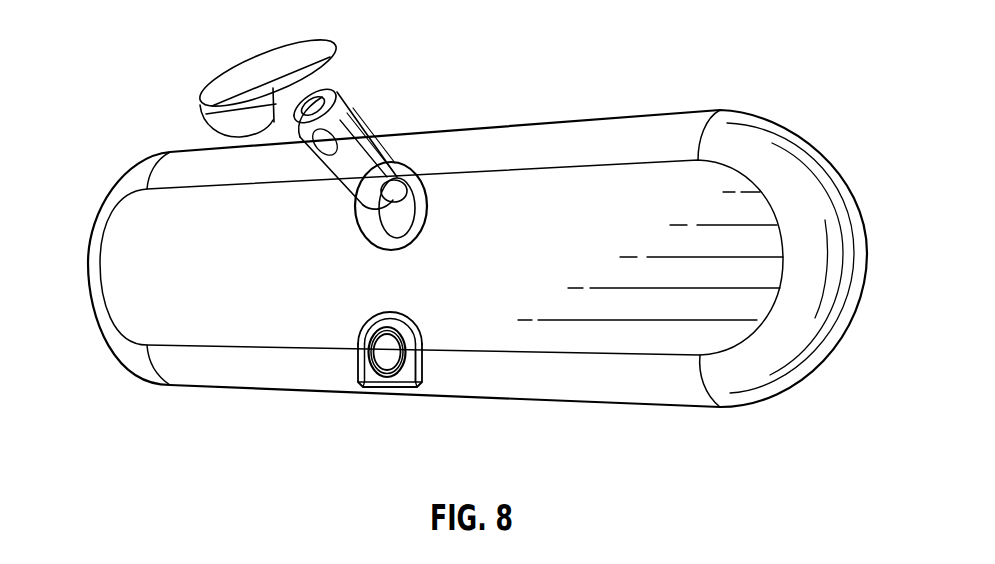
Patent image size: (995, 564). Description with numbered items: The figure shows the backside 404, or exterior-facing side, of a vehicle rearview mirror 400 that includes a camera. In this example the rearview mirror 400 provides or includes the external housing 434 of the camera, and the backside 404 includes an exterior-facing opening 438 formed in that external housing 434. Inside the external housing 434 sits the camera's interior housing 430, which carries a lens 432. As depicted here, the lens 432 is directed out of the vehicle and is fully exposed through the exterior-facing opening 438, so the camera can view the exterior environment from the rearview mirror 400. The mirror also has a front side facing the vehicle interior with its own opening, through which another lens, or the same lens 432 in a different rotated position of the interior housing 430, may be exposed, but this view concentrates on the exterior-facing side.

The rearview mirror 400 is at (638, 44).
The backside 404 is at (140, 290).
The interior housing 430 is at (383, 312).
The lens 432 is at (393, 348).
The external housing 434 is at (422, 356).
The exterior-facing opening 438 is at (336, 330).